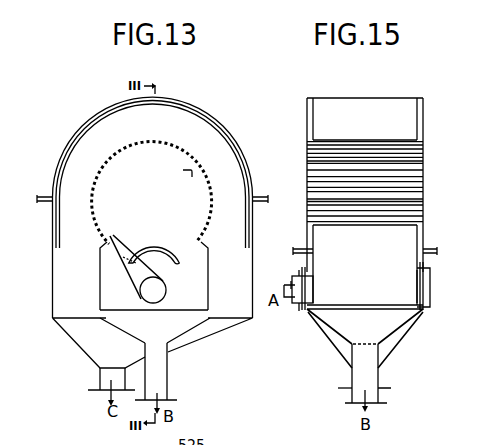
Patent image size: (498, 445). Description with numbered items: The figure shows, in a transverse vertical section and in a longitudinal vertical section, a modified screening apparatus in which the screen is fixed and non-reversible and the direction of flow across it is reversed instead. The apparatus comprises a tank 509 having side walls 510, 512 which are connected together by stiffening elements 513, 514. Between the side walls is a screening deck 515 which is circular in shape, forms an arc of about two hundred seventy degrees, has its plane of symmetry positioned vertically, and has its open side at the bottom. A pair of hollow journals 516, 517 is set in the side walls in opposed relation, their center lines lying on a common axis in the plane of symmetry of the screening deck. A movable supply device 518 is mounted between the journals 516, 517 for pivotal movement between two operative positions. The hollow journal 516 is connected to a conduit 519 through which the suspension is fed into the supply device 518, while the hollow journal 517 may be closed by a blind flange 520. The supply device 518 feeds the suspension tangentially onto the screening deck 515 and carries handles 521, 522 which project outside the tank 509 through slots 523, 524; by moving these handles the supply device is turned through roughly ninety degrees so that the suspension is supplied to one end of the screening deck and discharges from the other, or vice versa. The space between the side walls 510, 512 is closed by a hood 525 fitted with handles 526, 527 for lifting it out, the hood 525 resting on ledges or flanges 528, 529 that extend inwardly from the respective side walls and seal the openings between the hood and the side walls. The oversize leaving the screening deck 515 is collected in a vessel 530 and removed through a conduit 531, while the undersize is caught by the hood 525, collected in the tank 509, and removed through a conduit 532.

In FIG. 13, the tank 509 is at (52, 289).
In FIG. 15, the tank 509 is at (324, 332).
In FIG. 15, the side wall 510 is at (307, 118).
In FIG. 13, the side wall 512 is at (153, 248).
In FIG. 15, the side wall 512 is at (423, 118).
In FIG. 13, the stiffening element 513 is at (204, 168).
In FIG. 13, the stiffening element 514 is at (138, 174).
In FIG. 15, the stiffening element 514 is at (423, 173).
In FIG. 13, the screening deck 515 is at (117, 156).
In FIG. 15, the screening deck 515 is at (369, 147).
In FIG. 15, the hollow journal 516 is at (313, 291).
In FIG. 15, the hollow journal 517 is at (417, 291).
In FIG. 13, the movable supply device 518 is at (135, 269).
In FIG. 15, the movable supply device 518 is at (365, 264).
In FIG. 15, the conduit 519 is at (285, 299).
In FIG. 15, the blind flange 520 is at (439, 286).
In FIG. 15, the handle 521 is at (288, 251).
In FIG. 15, the handle 522 is at (437, 251).
In FIG. 15, the slot 523 is at (308, 248).
In FIG. 13, the slot 524 is at (157, 249).
In FIG. 15, the slot 524 is at (425, 248).
In FIG. 13, the hood 525 is at (180, 106).
In FIG. 15, the hood 525 is at (362, 94).
In FIG. 13, the handle 526 is at (36, 191).
In FIG. 13, the handle 527 is at (270, 191).
In FIG. 15, the ledge or flange 528 is at (315, 103).
In FIG. 13, the ledge or flange 529 is at (191, 112).
In FIG. 15, the ledge or flange 529 is at (420, 101).
In FIG. 13, the vessel 530 is at (206, 285).
In FIG. 15, the vessel 530 is at (306, 261).
In FIG. 13, the conduit 531 is at (163, 377).
In FIG. 15, the conduit 531 is at (378, 377).
In FIG. 13, the conduit 532 is at (100, 377).
In FIG. 15, the conduit 532 is at (353, 377).